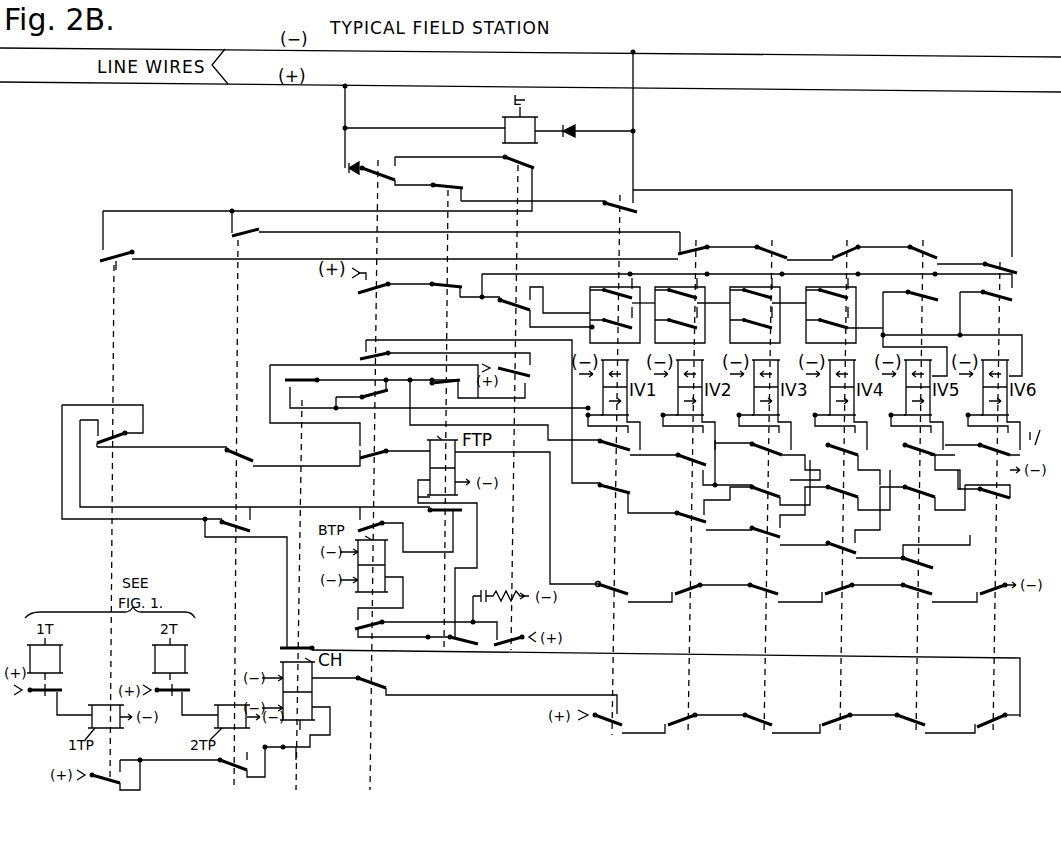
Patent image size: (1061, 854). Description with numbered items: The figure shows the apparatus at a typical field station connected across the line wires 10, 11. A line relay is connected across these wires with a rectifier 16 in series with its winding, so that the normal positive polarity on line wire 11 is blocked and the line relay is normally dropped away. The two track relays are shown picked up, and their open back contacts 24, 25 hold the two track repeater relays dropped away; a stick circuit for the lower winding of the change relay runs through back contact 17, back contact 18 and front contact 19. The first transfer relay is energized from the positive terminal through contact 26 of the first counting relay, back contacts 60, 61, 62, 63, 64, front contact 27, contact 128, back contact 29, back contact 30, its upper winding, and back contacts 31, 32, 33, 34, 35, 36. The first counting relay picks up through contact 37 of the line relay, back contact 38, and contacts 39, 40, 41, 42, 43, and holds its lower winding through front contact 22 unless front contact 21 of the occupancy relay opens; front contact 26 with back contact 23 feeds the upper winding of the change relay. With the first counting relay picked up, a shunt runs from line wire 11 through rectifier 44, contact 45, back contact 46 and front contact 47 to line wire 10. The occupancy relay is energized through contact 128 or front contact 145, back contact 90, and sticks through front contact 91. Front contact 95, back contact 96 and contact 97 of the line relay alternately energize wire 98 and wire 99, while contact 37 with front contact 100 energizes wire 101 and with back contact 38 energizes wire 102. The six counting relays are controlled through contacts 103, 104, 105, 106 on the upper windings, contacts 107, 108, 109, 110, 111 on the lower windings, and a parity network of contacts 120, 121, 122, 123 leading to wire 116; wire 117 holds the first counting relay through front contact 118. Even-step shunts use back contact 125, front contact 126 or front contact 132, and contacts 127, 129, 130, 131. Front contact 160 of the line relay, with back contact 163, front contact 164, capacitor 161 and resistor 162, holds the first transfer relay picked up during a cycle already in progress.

The line wire 10 is at (780, 57).
The positive line wire 11 is at (778, 88).
The rectifier 16 is at (572, 136).
The back contact of relay 1TP 17 is at (108, 788).
The back contact of relay 2TP 18 is at (222, 768).
The front contact of change relay CH 19 is at (296, 752).
The front contact of relay BTP 21 is at (377, 391).
The front contact of relay 1V1 22 is at (785, 451).
The back contact of relay BTP 23 is at (378, 690).
The back contact of track relay 1T 24 is at (32, 696).
The back contact of track relay 2T 25 is at (186, 688).
The contact of counting relay 1V1 26 is at (605, 725).
The front contact of change relay CH 27 is at (308, 635).
The back contact of relay 2TP 29 is at (232, 455).
The back contact of relay BTP 30 is at (372, 458).
The back contact of relay 1V1 31 is at (608, 588).
The back contact of relay 1V2 32 is at (712, 600).
The back contact of relay 1V3 33 is at (778, 600).
The back contact of relay 1V4 34 is at (864, 600).
The back contact of relay 1V5 35 is at (933, 600).
The back contact of relay 1V6 36 is at (999, 599).
The contact of line relay L 37 is at (518, 366).
The back contact of relay FTP 38 is at (470, 391).
The contact of relay 1V2 39 is at (680, 470).
The contact of relay 1V3 40 is at (757, 487).
The contact of relay 1V4 41 is at (850, 454).
The back contact of relay 1V5 42 is at (910, 514).
The back contact of relay 1V6 43 is at (982, 450).
The rectifier 44 is at (368, 152).
The contact of relay BTP 45 is at (371, 182).
The back contact of relay FTP 46 is at (447, 180).
The front contact of relay 1V1 47 is at (620, 183).
The back contact of relay 1V2 60 is at (685, 723).
The back contact of relay 1V3 61 is at (755, 723).
The back contact of relay 1V4 62 is at (832, 723).
The back contact of relay 1V5 63 is at (907, 723).
The back contact of relay 1V6 64 is at (985, 723).
The back contact of relay FTP 90 is at (422, 530).
The front contact of relay BTP 91 is at (368, 516).
The front contact of relay BTP 95 is at (378, 288).
The back contact of relay FTP 96 is at (443, 280).
The contact of line relay L 97 is at (506, 314).
The wire 98 is at (560, 293).
The wire 99 is at (568, 308).
The front contact 100 is at (356, 351).
The wire 101 is at (590, 455).
The wire 102 is at (467, 410).
The back contact of relay 1V1 103 is at (623, 321).
The back contact of relay 1V2 104 is at (692, 310).
The contact of relay 1V3 105 is at (768, 310).
The back contact of relay 1V4 106 is at (844, 310).
The back contact of relay 1V1 107 is at (625, 498).
The back contact of relay 1V2 108 is at (703, 524).
The front contact of relay 1V3 109 is at (776, 540).
The back contact of relay 1V4 110 is at (853, 554).
The front contact of relay 1V5 111 is at (924, 557).
The wire 116 is at (990, 429).
The wire 117 is at (712, 281).
The front contact of relay 1V1 118 is at (615, 310).
The back contact of relay 1V3 120 is at (533, 417).
The back contact of relay 1V4 121 is at (835, 504).
The contact of relay 1V5 122 is at (920, 458).
The front contact of relay 1V6 123 is at (1000, 500).
The back contact of relay L 125 is at (501, 170).
The front contact of relay 1TP 126 is at (120, 246).
The contact of relay 1V2 127 is at (708, 230).
The contact of relay 1TP 128 is at (778, 234).
The back contact of relay 1V4 129 is at (845, 248).
The back contact of relay 1V5 130 is at (923, 250).
The front contact of relay 1V6 131 is at (990, 257).
The front contact of relay 2TP 132 is at (250, 234).
The front contact of relay 2TP 145 is at (262, 522).
The front contact of relay L 160 is at (510, 632).
The capacitor 161 is at (475, 596).
The resistor 162 is at (511, 586).
The back contact of relay BTP 163 is at (384, 618).
The front contact of relay FTP 164 is at (457, 646).